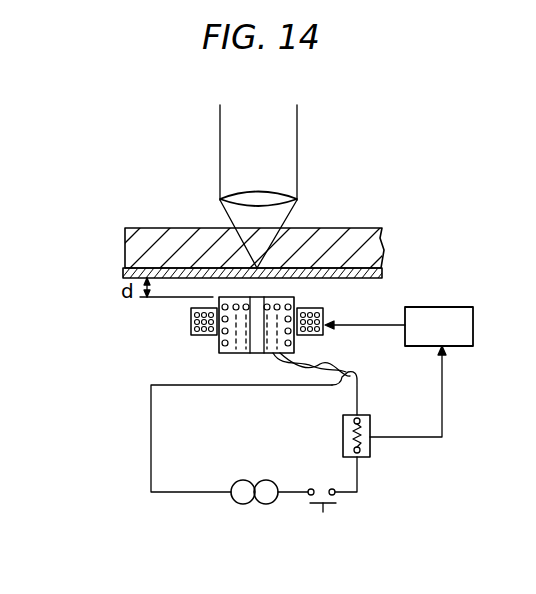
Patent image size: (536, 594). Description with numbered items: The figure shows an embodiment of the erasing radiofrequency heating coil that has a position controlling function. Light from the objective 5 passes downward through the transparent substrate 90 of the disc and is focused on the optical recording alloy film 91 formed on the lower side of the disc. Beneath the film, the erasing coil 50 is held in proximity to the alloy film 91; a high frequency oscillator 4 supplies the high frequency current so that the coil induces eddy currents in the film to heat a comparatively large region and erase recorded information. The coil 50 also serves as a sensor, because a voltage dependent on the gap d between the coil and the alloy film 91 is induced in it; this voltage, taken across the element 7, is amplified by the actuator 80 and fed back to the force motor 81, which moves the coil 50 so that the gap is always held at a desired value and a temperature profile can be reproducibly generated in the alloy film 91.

The objective 5 is at (297, 205).
The transparent substrate 90 is at (125, 240).
The optical recording alloy film 91 is at (125, 270).
The force motor 81 is at (191, 321).
The erasing coil 50 is at (222, 343).
The actuator 80 is at (436, 307).
The resistor / voltage source E0 7 is at (372, 447).
The high frequency oscillator 4 is at (252, 508).